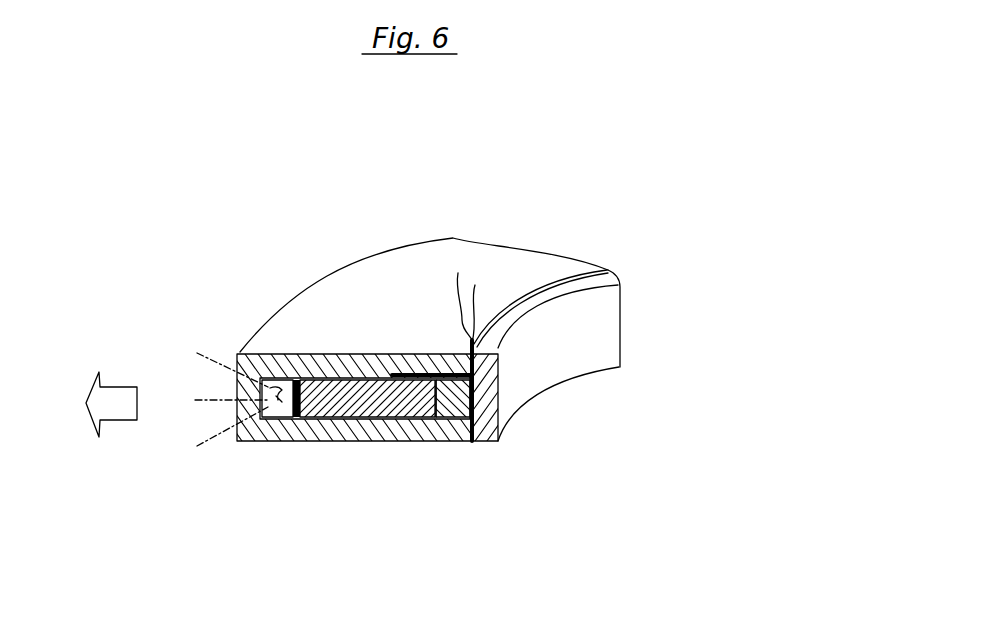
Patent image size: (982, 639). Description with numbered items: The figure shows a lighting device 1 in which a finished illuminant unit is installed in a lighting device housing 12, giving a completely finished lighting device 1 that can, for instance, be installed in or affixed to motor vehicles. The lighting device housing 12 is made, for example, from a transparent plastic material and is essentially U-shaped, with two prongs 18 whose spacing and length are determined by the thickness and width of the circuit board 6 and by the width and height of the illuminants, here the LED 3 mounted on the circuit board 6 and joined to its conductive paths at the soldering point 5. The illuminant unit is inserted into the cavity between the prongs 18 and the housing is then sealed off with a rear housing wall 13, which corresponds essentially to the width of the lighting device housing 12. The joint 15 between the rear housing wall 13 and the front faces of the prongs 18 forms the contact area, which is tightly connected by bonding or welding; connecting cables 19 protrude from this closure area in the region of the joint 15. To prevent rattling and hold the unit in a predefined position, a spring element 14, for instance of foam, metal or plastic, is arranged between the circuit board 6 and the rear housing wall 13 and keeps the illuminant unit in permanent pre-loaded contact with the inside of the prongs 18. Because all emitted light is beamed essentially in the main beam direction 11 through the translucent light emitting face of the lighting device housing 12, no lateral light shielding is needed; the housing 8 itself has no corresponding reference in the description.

The lighting device 1 is at (338, 238).
The LED 3 is at (275, 407).
The soldering point 5 is at (296, 380).
The circuit board 6 is at (347, 403).
The housing 8 is at (213, 362).
The main beam direction 11 is at (122, 402).
The lighting device housing 12 is at (462, 260).
The rear housing wall 13 is at (568, 353).
The spring element 14 is at (453, 402).
The joint 15 is at (468, 418).
The prongs 18 is at (437, 373).
The connecting cables 19 is at (475, 285).